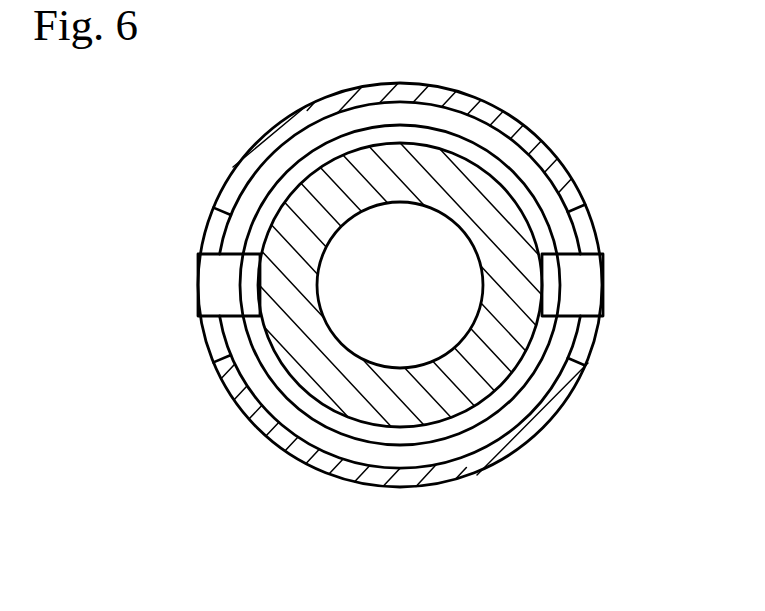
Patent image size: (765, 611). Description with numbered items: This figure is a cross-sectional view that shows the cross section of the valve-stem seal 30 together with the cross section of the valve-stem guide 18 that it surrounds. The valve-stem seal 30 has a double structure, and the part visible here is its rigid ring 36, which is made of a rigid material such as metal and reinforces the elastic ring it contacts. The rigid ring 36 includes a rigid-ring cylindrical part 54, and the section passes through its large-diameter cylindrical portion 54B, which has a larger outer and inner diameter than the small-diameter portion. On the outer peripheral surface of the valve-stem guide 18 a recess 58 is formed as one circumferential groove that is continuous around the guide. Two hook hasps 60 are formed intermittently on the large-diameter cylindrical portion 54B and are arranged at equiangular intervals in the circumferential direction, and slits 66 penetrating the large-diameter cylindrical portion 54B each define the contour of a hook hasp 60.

The valve-stem seal 30 is at (198, 170).
The valve-stem guide 18 is at (510, 203).
The recess 58 is at (510, 180).
The slits 66 is at (587, 233).
The hook hasps 60 is at (578, 278).
The rigid-ring cylindrical part 54 is at (218, 380).
The large-diameter cylindrical portion 54B is at (243, 420).
The rigid ring 36 is at (305, 463).